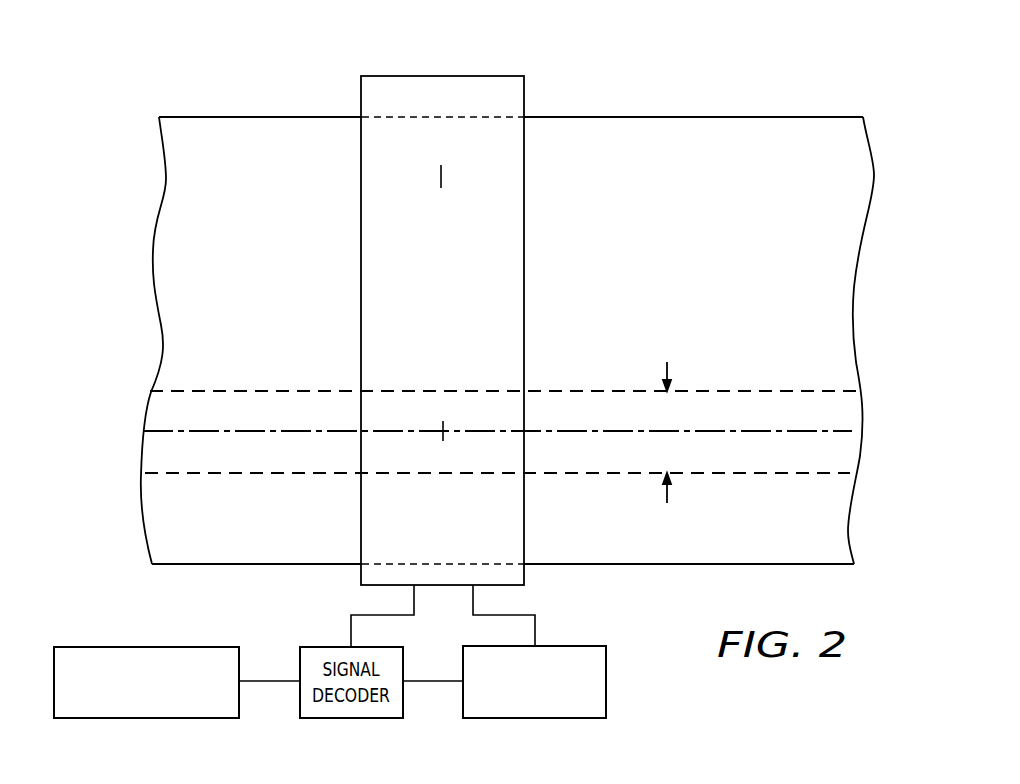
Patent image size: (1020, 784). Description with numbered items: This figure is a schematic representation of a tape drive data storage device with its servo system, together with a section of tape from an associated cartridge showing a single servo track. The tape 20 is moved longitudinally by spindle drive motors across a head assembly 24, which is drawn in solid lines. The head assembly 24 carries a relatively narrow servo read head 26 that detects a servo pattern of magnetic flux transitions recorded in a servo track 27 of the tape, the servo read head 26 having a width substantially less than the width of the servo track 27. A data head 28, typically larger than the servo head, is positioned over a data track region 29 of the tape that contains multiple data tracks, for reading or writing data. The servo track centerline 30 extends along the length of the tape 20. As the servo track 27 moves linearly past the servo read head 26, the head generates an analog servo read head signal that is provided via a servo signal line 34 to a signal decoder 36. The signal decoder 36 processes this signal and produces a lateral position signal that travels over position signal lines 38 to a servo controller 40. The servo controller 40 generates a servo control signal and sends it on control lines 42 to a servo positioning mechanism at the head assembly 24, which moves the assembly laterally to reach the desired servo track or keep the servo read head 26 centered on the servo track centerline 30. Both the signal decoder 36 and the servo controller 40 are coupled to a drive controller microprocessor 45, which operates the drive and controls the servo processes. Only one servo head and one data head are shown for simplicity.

The tape 20 is at (229, 117).
The head assembly 24 is at (413, 76).
The servo read head 26 is at (441, 425).
The servo track 27 is at (669, 367).
The data head 28 is at (440, 170).
The data track region 29 is at (732, 218).
The servo track centerline 30 is at (850, 430).
The servo signal line 34 is at (349, 632).
The signal decoder 36 is at (298, 695).
The position signal lines 38 is at (429, 683).
The servo controller 40 is at (607, 684).
The control lines 42 is at (536, 632).
The drive controller microprocessor 45 is at (146, 646).